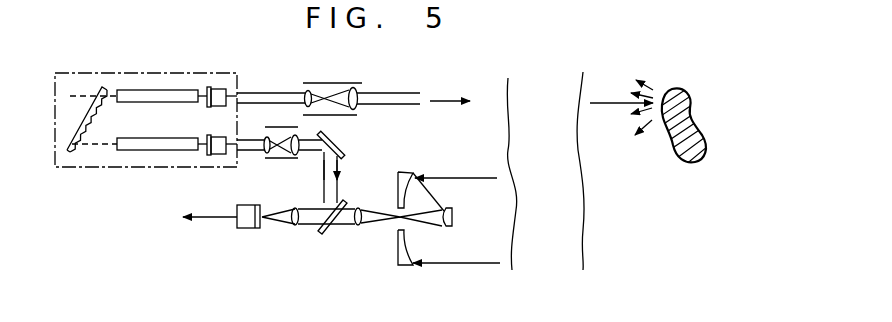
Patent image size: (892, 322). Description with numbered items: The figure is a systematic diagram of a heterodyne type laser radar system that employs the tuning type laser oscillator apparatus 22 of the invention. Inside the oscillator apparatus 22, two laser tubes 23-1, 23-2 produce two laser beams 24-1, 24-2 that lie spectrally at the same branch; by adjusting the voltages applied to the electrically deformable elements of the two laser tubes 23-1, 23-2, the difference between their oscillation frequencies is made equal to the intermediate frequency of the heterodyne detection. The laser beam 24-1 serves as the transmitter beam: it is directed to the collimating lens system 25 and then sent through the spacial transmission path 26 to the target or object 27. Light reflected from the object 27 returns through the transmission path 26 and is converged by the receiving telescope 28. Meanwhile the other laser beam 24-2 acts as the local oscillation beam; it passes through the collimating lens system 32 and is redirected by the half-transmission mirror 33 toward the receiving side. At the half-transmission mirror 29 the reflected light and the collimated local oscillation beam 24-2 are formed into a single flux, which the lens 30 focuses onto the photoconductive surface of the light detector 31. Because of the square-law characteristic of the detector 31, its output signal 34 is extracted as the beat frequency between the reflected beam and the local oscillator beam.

The tuning type laser oscillator apparatus 22 is at (160, 73).
The laser tube 23-1 is at (148, 102).
The laser tube 23-2 is at (147, 150).
The laser beam 24-1 is at (262, 93).
The laser beam 24-2 is at (253, 140).
The collimating lens system 25 is at (318, 82).
The spacial transmission path 26 is at (544, 108).
The target or object 27 is at (688, 92).
The receiving telescope 28 is at (398, 250).
The half-transmission mirror 29 is at (333, 228).
The lens 30 is at (297, 225).
The light detector 31 is at (248, 228).
The collimating lens system 32 is at (280, 158).
The half-transmission mirror 33 is at (338, 143).
The output signal 34 is at (207, 218).